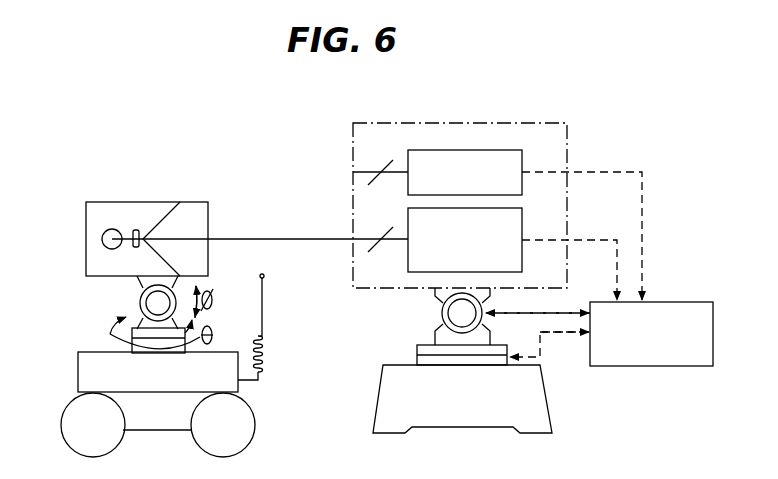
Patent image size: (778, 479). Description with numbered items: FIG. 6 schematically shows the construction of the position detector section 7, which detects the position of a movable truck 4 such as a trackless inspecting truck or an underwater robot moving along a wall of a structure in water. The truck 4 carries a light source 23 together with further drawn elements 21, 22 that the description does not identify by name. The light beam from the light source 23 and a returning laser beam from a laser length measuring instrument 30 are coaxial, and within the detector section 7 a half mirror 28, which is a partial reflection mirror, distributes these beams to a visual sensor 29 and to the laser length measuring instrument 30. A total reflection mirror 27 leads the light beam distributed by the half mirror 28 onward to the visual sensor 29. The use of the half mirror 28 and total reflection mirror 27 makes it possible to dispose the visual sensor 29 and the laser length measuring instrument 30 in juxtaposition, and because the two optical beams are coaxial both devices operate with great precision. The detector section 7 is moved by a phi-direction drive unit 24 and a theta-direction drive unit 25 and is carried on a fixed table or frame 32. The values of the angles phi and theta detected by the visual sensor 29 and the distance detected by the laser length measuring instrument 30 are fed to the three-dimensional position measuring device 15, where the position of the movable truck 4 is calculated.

The movable truck 4 is at (77, 367).
The position detector section 7 is at (656, 201).
The three-dimensional position measuring device 15 is at (600, 358).
The target unit housing 21 is at (192, 215).
The corner cube / reflector element 22 is at (138, 229).
The light source 23 is at (107, 228).
The phi-direction drive unit 24 is at (140, 302).
The theta-direction drive unit 25 is at (130, 330).
The total reflection mirror 27 is at (380, 180).
The half mirror 28 is at (374, 249).
The visual sensor 29 is at (425, 155).
The laser length measuring instrument 30 is at (507, 217).
The fixed table 32 is at (392, 407).